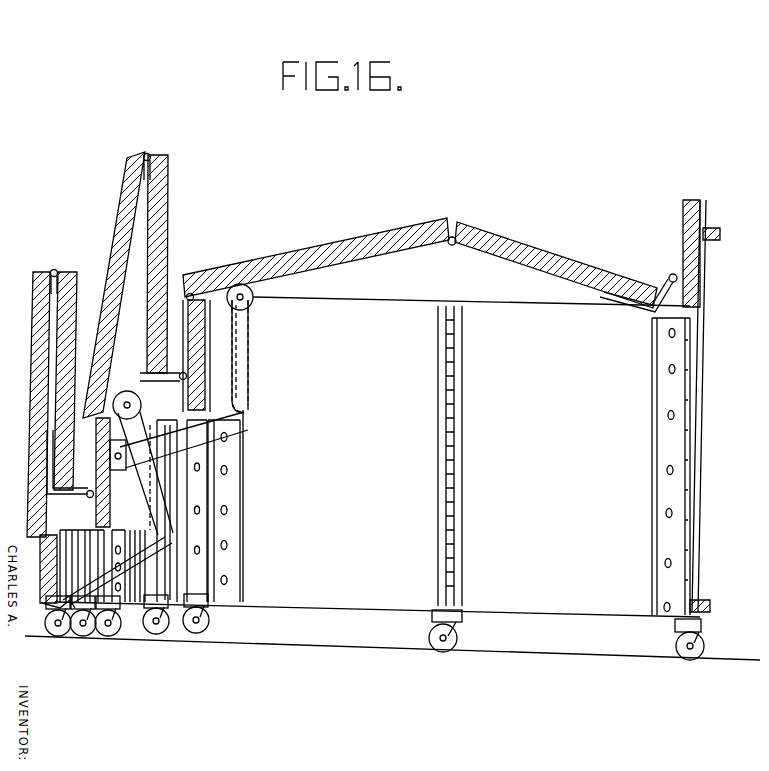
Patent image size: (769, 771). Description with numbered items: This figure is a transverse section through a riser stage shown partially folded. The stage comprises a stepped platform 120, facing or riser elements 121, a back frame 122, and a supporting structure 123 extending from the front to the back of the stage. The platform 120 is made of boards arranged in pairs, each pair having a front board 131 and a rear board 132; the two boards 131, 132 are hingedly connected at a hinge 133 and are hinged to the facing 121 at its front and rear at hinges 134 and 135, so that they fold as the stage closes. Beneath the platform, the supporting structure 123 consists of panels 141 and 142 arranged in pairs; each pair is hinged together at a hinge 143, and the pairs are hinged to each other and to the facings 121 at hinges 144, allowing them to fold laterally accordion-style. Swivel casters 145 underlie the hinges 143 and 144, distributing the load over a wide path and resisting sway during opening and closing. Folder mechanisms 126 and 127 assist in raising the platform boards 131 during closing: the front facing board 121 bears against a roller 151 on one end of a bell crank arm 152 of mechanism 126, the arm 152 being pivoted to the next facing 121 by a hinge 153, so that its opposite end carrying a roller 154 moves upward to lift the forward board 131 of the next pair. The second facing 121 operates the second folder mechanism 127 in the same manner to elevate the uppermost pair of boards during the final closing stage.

The stepped platform 120 is at (328, 344).
The facing or riser element 121 is at (683, 220).
The back frame 122 is at (706, 265).
The supporting structure 123 is at (492, 304).
The folder mechanism 126 is at (234, 456).
The folder mechanism 127 is at (246, 372).
The front board 131 is at (282, 258).
The rear board 132 is at (170, 215).
The hinge 133 is at (147, 153).
The hinge 134 is at (188, 296).
The hinge 135 is at (670, 276).
The panel 141 is at (150, 420).
The panel 142 is at (98, 626).
The hinge 143 is at (452, 398).
The hinge 144 is at (244, 392).
The swivel caster 145 is at (60, 637).
The roller 151 is at (50, 602).
The bell crank arm 152 is at (118, 508).
The hinge 153 is at (118, 470).
The roller 154 is at (128, 391).